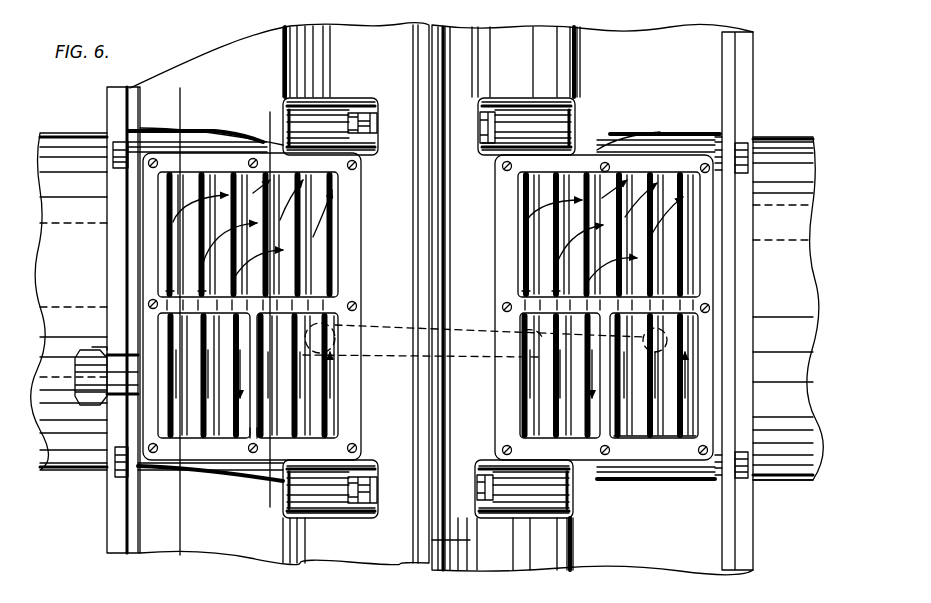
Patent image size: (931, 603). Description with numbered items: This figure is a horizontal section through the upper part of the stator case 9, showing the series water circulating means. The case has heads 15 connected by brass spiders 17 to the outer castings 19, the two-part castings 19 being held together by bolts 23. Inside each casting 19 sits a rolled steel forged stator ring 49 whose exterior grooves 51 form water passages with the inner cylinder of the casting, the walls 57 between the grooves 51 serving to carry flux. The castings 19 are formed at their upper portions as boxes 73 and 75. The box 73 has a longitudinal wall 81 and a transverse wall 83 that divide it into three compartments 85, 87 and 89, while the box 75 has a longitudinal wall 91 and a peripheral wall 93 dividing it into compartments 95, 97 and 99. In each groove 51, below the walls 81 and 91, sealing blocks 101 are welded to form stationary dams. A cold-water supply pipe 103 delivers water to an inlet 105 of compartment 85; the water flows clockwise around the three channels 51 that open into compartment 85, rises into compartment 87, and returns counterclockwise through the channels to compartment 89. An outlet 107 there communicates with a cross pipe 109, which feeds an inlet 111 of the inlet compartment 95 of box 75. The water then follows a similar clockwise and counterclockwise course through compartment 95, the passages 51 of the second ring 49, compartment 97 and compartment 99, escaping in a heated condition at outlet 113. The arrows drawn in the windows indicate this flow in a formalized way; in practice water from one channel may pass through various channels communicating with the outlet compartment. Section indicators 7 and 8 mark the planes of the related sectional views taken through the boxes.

The section line 7- 7 is at (200, 102).
The section line 8- 8 is at (287, 125).
The stator case 9 is at (470, 545).
The head 15 is at (67, 137).
The brass spider 17 is at (123, 117).
The outer casting 19 is at (375, 547).
The bolt 23 is at (365, 115).
The stator ring 49 is at (313, 405).
The groove 51 is at (237, 172).
The wall 57 is at (313, 177).
The box 73 is at (356, 250).
The box 75 is at (708, 232).
The longitudinal wall 81 is at (313, 303).
The transverse wall 83 is at (253, 428).
The compartment 85 is at (190, 350).
The compartment 87 is at (172, 235).
The compartment 89 is at (303, 380).
The longitudinal wall 91 is at (680, 290).
The peripheral wall 93 is at (632, 444).
The compartment 95 is at (538, 408).
The compartment 97 is at (572, 273).
The compartment 99 is at (667, 355).
The sealing block 101 is at (207, 290).
The cold-water supply pipe 103 is at (80, 370).
The inlet 105 is at (113, 403).
The outlet 107 is at (330, 326).
The cross pipe 109 is at (460, 355).
The inlet 111 is at (545, 338).
The outlet 113 is at (668, 338).